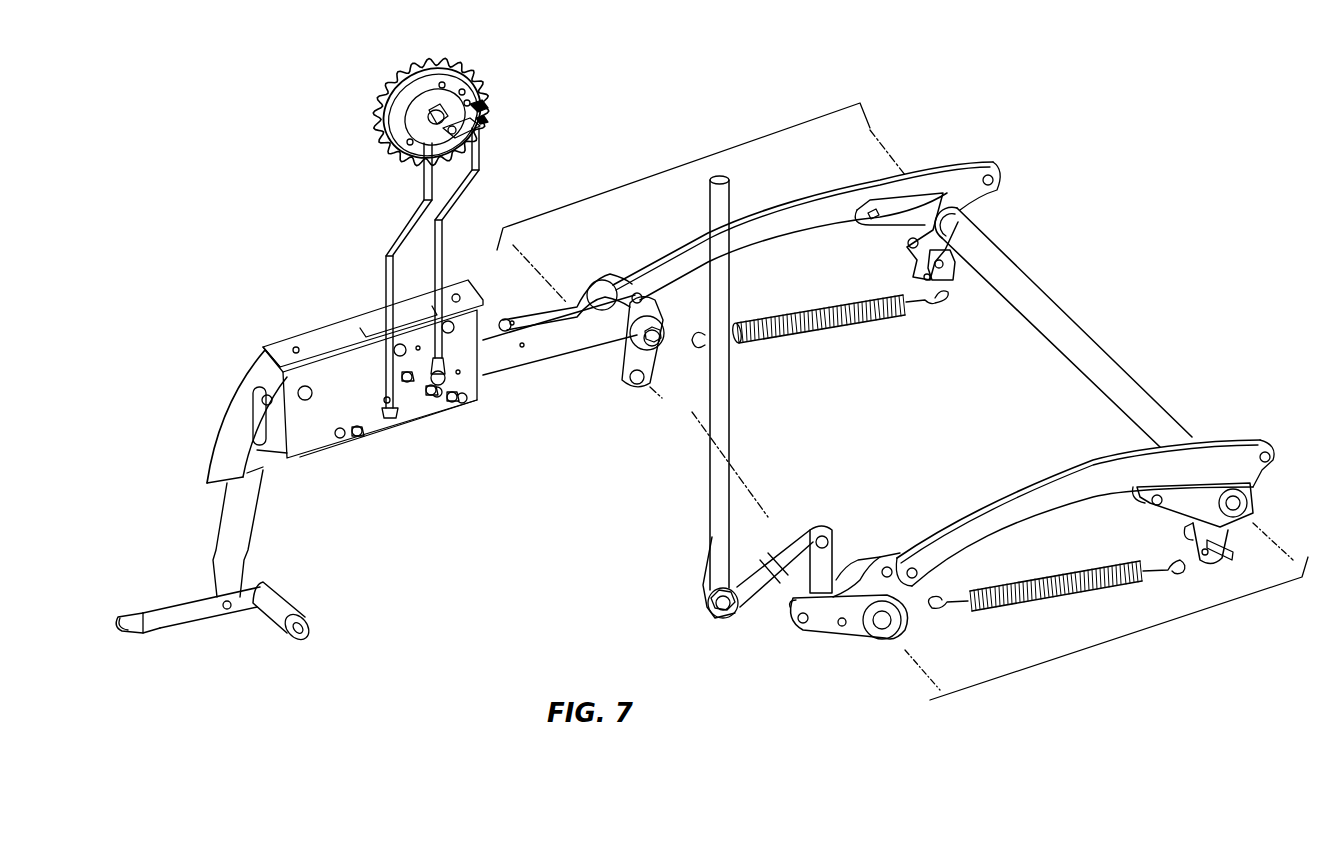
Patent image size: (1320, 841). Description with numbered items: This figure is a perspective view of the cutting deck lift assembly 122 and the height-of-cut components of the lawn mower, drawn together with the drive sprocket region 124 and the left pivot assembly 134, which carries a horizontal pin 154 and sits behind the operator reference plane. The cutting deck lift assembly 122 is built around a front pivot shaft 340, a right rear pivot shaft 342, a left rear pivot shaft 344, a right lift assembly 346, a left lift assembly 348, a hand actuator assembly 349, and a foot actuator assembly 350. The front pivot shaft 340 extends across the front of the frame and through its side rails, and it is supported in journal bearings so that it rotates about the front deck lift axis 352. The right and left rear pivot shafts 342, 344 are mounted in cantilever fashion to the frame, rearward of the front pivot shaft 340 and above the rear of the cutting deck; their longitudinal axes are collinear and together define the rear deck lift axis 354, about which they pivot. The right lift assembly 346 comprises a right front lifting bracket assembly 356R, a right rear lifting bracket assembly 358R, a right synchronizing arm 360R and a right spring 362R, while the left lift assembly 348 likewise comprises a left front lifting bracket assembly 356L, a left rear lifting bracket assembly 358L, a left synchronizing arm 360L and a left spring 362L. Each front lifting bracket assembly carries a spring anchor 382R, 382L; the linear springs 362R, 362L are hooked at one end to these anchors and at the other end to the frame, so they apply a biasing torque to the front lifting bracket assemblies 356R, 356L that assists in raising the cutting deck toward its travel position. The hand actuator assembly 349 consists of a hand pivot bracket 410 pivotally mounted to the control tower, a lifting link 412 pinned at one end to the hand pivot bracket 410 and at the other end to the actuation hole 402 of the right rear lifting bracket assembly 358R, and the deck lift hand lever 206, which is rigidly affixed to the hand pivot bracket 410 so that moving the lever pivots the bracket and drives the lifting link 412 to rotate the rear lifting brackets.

The cutting deck lift assembly 122 is at (1135, 282).
The drive sprocket assembly 124 is at (343, 183).
The left pivot assembly 134 is at (312, 585).
The horizontal pin 154 is at (297, 635).
The deck lift hand lever 206 is at (713, 467).
The front pivot shaft 340 is at (1017, 277).
The right rear pivot shaft 342 is at (843, 567).
The left rear pivot shaft 344 is at (610, 353).
The right lift assembly 346 is at (1117, 643).
The left lift assembly 348 is at (680, 150).
The hand actuator assembly 349 is at (677, 567).
The foot actuator assembly 350 is at (160, 592).
The front deck lift axis 352 is at (1267, 535).
The rear deck lift axis 354 is at (900, 645).
The left front lifting bracket assembly 356L is at (905, 215).
The right front lifting bracket assembly 356R is at (1200, 505).
The left rear lifting bracket assembly 358L is at (543, 305).
The right rear lifting bracket assembly 358R is at (857, 627).
The left synchronizing arm 360L is at (790, 220).
The right synchronizing arm 360R is at (1063, 490).
The left spring 362L is at (797, 320).
The right spring 362R is at (1050, 597).
The spring anchor 382L is at (957, 270).
The spring anchor 382R is at (1180, 525).
The actuation hole 402 is at (840, 627).
The hand pivot bracket 410 is at (707, 593).
The lifting link 412 is at (810, 573).